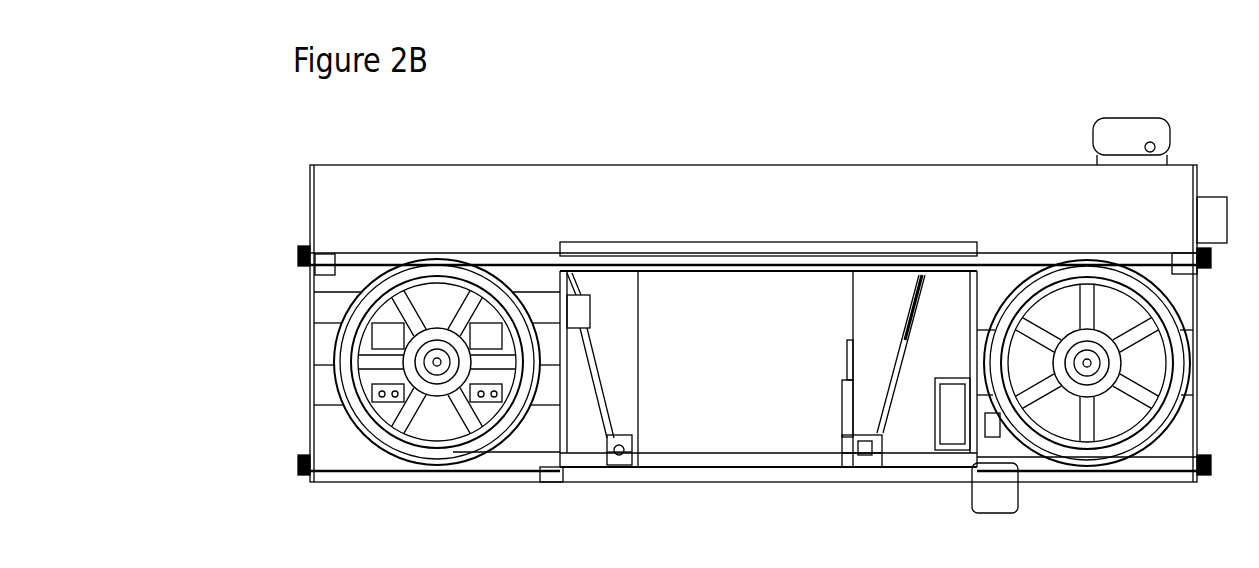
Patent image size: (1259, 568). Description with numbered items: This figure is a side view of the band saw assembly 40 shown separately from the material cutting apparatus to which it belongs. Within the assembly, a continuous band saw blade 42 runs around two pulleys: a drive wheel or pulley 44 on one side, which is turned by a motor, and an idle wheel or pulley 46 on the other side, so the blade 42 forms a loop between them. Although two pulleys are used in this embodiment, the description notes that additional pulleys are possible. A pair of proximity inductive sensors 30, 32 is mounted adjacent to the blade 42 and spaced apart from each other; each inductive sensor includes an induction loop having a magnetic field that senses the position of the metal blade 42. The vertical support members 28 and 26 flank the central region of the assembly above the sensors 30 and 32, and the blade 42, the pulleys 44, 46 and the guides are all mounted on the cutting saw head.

The second vertical support member 26 is at (851, 318).
The first vertical support member 28 is at (641, 332).
The proximity inductive sensor 30 is at (875, 467).
The proximity inductive sensor 32 is at (621, 467).
The band saw assembly 40 is at (744, 165).
The continuous band saw blade 42 is at (726, 467).
The drive wheel or pulley 44 is at (1075, 268).
The idle wheel or pulley 46 is at (437, 289).